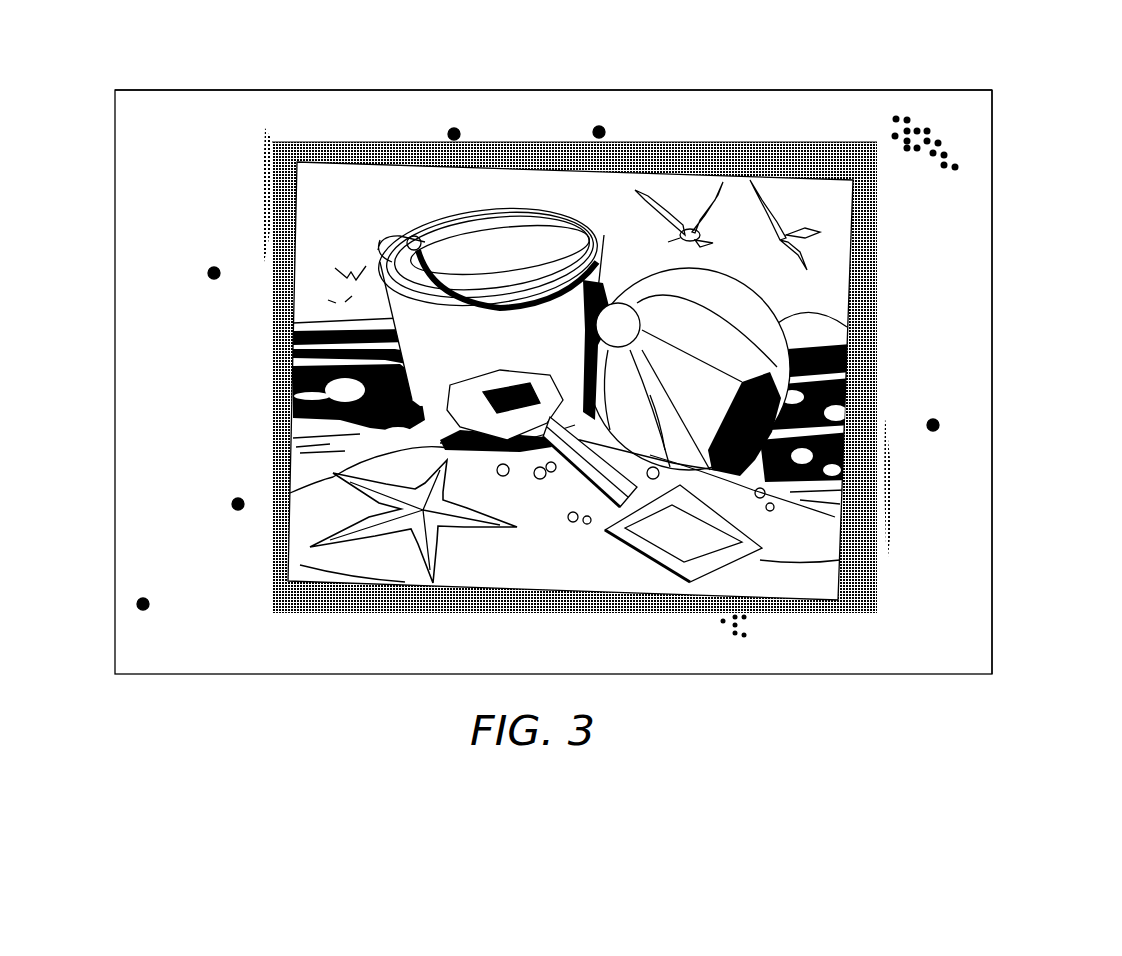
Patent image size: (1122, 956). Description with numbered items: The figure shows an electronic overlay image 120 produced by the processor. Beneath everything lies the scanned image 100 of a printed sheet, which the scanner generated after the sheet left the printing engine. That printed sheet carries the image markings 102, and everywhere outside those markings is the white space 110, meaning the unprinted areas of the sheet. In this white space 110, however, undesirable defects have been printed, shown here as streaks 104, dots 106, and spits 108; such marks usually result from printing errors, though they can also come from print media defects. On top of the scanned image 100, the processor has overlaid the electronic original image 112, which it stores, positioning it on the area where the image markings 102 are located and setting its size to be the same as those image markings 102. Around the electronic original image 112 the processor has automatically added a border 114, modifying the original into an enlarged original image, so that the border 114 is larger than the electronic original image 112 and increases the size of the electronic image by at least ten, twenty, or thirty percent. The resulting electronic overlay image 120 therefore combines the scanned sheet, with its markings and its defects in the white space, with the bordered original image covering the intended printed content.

The scanned image 100 is at (113, 369).
The image markings 102 is at (378, 158).
The streaks 104 is at (262, 170).
The dots 106 is at (143, 604).
The spits 108 is at (910, 118).
The white space 110 is at (142, 203).
The electronic original image 112 is at (787, 170).
The border 114 is at (672, 142).
The electronic overlay image 120 is at (1003, 207).